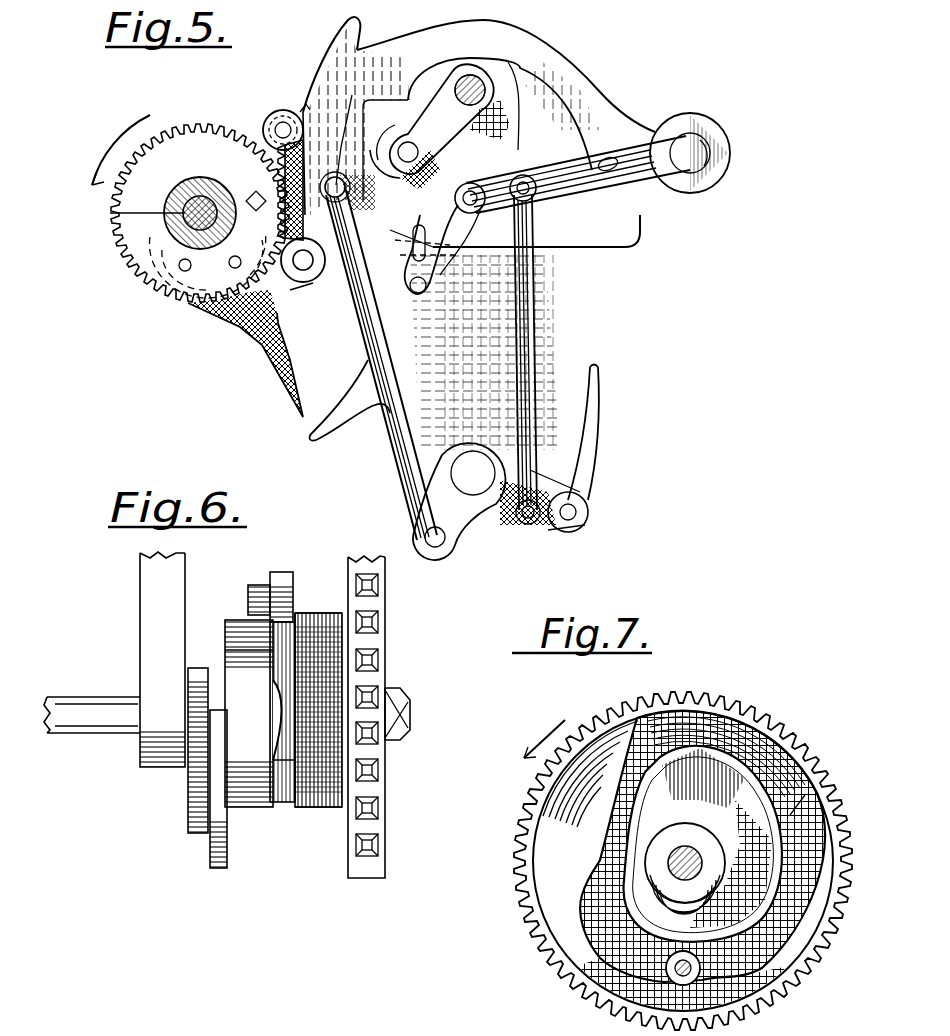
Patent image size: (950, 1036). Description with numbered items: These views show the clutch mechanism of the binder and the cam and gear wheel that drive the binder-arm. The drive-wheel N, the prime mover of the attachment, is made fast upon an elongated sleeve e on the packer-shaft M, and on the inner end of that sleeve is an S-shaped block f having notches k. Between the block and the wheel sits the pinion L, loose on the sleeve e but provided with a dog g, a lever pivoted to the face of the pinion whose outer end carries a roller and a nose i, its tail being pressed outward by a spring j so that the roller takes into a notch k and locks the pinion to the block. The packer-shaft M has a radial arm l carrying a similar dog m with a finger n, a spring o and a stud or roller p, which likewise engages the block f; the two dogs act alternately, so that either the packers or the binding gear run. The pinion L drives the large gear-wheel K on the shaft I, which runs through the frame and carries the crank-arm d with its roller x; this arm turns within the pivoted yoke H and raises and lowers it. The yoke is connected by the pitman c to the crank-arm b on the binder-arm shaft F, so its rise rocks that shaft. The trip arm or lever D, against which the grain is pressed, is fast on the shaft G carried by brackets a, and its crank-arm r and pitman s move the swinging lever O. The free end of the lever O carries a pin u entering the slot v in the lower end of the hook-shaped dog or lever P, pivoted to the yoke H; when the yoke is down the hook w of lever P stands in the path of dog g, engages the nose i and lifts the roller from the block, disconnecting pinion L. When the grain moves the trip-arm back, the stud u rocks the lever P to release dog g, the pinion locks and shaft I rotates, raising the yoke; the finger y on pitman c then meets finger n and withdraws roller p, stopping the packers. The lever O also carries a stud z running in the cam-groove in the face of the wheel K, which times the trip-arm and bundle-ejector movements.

In FIG. 5, the yoke H is at (479, 233).
In FIG. 5, the shaft I is at (470, 90).
In FIG. 7, the shaft I is at (685, 863).
In FIG. 5, the crank-arm d is at (450, 112).
In FIG. 5, the brackets or hangers a is at (405, 167).
In FIG. 7, the brackets or hangers a is at (798, 805).
In FIG. 5, the swinging lever O is at (578, 174).
In FIG. 5, the roller x is at (690, 153).
In FIG. 5, the stud or roller z is at (469, 188).
In FIG. 7, the stud or roller z is at (718, 972).
In FIG. 5, the pitman s is at (537, 335).
In FIG. 5, the pin or stud u is at (415, 292).
In FIG. 5, the slot v is at (413, 255).
In FIG. 5, the pitman c is at (398, 450).
In FIG. 5, the dog or hook-shaped lever P is at (347, 180).
In FIG. 5, the shaft F is at (459, 501).
In FIG. 5, the crank-arm b is at (438, 524).
In FIG. 5, the shaft G is at (576, 512).
In FIG. 5, the crank-arm r is at (535, 520).
In FIG. 5, the trip arm or lever D is at (597, 450).
In FIG. 5, the pinion L is at (200, 213).
In FIG. 6, the pinion L is at (318, 723).
In FIG. 5, the sleeve e is at (232, 178).
In FIG. 6, the sleeve e is at (282, 712).
In FIG. 5, the packer-shaft M is at (127, 213).
In FIG. 6, the packer-shaft M is at (92, 715).
In FIG. 5, the dog m is at (192, 312).
In FIG. 6, the dog m is at (218, 820).
In FIG. 5, the dog g is at (290, 190).
In FIG. 6, the dog g is at (295, 618).
In FIG. 5, the hook w is at (278, 108).
In FIG. 5, the point or nose i is at (305, 114).
In FIG. 6, the point or nose i is at (281, 587).
In FIG. 5, the finger n is at (262, 118).
In FIG. 6, the finger n is at (248, 592).
In FIG. 5, the finger y is at (349, 400).
In FIG. 5, the stud or roller p is at (308, 252).
In FIG. 6, the radial arm l is at (189, 750).
In FIG. 6, the S-shaped block f is at (249, 713).
In FIG. 6, the notches k is at (222, 650).
In FIG. 6, the spring j is at (290, 785).
In FIG. 6, the drive-wheel N is at (385, 790).
In FIG. 6, the spring o is at (397, 706).
In FIG. 7, the gear-wheel K is at (555, 855).